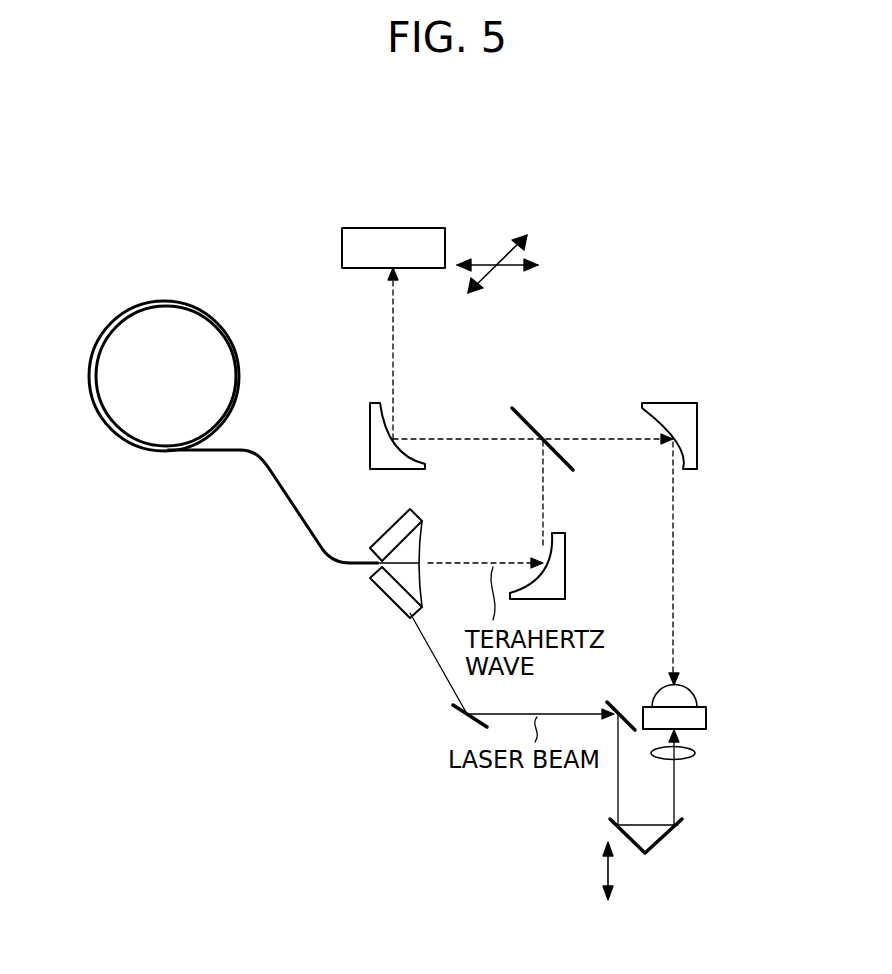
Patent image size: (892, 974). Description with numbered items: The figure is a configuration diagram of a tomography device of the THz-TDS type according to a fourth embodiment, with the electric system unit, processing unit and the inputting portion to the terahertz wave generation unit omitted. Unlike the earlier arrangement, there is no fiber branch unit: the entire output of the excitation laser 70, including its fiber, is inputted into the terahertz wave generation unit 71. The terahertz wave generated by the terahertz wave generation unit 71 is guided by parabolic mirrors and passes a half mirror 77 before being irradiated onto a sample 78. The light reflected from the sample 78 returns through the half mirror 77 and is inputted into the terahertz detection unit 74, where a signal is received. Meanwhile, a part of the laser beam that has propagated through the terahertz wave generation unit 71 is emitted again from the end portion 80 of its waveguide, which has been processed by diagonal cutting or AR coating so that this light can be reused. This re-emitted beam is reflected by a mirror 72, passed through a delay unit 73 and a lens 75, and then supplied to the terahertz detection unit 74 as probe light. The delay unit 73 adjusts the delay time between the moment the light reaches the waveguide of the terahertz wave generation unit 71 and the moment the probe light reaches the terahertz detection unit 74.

The excitation laser 70 is at (120, 443).
The terahertz wave generation unit 71 is at (380, 588).
The mirror 72 is at (455, 713).
The delay unit 73 is at (668, 837).
The terahertz detection unit 74 is at (700, 719).
The lens 75 is at (690, 752).
The half mirror 77 is at (539, 432).
The sample 78 is at (428, 228).
The end portion 80 is at (428, 648).